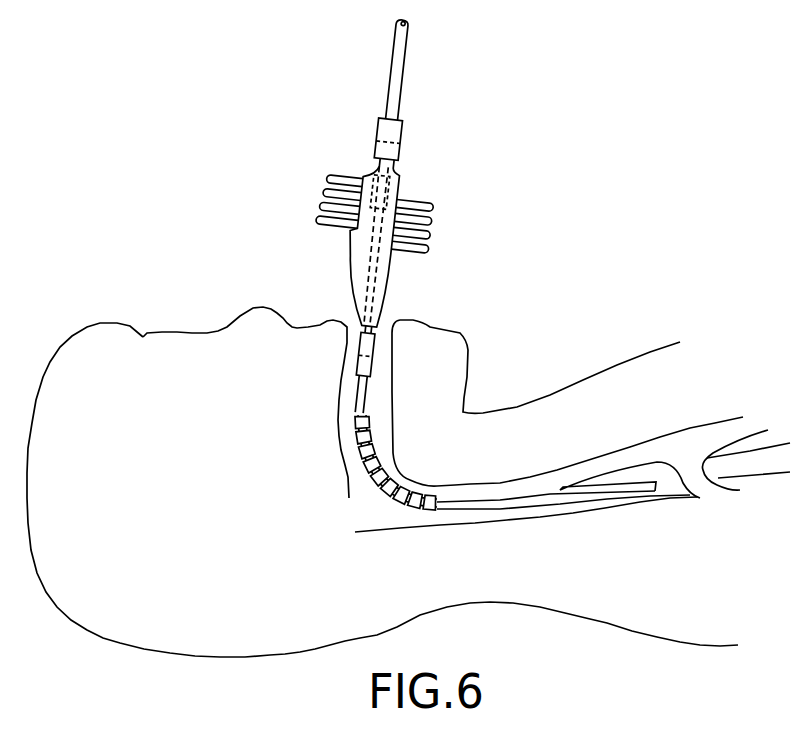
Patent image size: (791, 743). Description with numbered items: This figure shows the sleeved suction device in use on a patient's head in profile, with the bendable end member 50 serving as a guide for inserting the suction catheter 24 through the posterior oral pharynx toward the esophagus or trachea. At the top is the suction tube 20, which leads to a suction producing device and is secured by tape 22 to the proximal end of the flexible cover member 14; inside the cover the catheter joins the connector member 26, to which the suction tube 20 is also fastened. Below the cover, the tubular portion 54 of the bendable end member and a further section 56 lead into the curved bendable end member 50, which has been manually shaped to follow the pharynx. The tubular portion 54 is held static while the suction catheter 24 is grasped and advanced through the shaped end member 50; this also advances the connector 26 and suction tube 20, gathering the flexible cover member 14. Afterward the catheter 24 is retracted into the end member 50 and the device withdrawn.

The suction tube 20 is at (401, 70).
The tape 22 is at (401, 135).
The connector member 26 is at (387, 183).
The flexible plastic cover member 14 is at (389, 263).
The connector block 56 is at (358, 348).
The tubular portion 54 is at (361, 396).
The bendable end member 50 is at (374, 489).
The suction catheter 24 is at (505, 511).